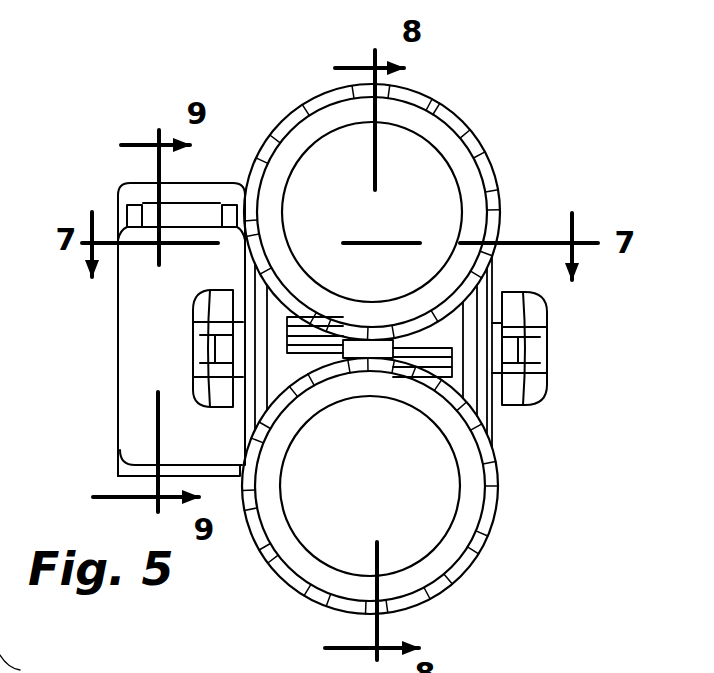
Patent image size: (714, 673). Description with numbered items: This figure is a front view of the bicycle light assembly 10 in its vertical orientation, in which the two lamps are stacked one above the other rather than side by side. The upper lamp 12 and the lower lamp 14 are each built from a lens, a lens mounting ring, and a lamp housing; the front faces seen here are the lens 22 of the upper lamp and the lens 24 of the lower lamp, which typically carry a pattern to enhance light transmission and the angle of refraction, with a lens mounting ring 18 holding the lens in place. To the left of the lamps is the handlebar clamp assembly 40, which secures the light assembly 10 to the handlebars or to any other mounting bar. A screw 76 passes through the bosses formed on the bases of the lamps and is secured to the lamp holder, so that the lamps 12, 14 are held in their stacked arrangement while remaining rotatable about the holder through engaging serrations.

The light assembly 10 is at (124, 104).
The handlebar clamp assembly 40 is at (110, 182).
The lamp 12 is at (450, 105).
The lens 22 is at (440, 183).
The lamp 14 is at (503, 468).
The lens 24 is at (378, 468).
The screw 76 is at (547, 350).
The lens mounting ring 18 is at (61, 659).